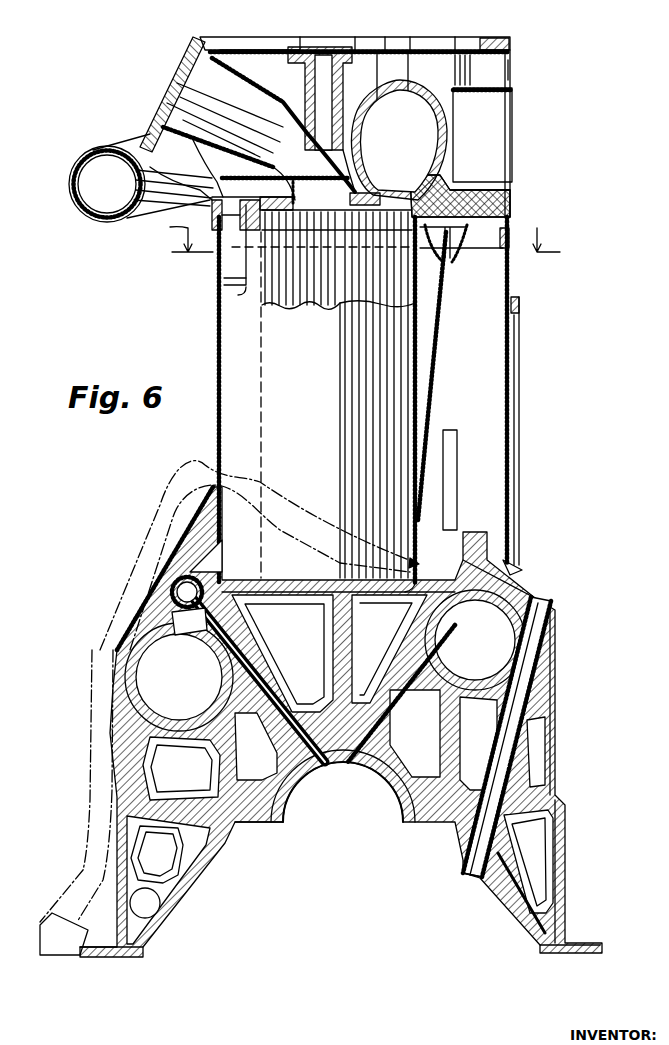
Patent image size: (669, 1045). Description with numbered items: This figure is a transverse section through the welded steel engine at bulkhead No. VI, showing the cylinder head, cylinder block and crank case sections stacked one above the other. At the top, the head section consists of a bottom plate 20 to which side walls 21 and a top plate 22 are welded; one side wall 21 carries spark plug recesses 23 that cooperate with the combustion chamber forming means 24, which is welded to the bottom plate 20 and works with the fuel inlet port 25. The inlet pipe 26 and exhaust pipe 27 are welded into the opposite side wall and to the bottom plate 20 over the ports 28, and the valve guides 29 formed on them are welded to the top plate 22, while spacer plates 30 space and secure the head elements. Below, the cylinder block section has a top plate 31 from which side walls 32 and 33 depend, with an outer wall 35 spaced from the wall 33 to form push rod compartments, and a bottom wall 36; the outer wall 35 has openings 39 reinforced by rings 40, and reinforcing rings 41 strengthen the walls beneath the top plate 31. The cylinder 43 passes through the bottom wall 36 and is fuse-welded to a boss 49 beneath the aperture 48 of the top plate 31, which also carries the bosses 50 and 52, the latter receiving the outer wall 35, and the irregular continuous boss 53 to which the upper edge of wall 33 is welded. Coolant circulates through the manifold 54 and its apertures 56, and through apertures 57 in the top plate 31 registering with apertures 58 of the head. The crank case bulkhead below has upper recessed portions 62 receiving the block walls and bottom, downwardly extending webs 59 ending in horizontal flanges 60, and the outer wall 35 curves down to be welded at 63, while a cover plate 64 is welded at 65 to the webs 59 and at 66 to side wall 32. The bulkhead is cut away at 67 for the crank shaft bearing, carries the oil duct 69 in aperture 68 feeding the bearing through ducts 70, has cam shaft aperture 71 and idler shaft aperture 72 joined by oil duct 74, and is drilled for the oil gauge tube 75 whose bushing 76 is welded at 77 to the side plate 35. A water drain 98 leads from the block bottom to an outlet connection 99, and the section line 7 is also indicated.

The bottom plate 20 is at (512, 210).
The side walls 21 is at (512, 70).
The top plate 22 is at (263, 50).
The spark plug recesses 23 is at (496, 125).
The combustion chamber forming means 24 is at (410, 110).
The fuel inlet port 25 is at (512, 195).
The inlet pipe 26 is at (140, 150).
The exhaust pipe 27 is at (207, 97).
The ports 28 is at (338, 235).
The valve guides 29 is at (345, 108).
The spacer plates 30 is at (483, 60).
The top plate 31 is at (420, 225).
The side wall 32 is at (218, 375).
The side wall 33 is at (437, 364).
The outer wall 35 is at (515, 290).
The bottom wall 36 is at (300, 580).
The openings 39 is at (512, 345).
The rings 40 is at (518, 415).
The reinforcing rings 41 is at (468, 263).
The cylinders 43 is at (298, 330).
The apertures 48 is at (402, 225).
The bosses 49 is at (448, 265).
The boss 50 is at (210, 217).
The boss 52 is at (470, 238).
The irregular continuous boss 53 is at (510, 258).
The manifold 54 is at (245, 286).
The apertures 56 is at (220, 280).
The apertures 57 is at (238, 262).
The apertures 58 is at (237, 203).
The webs 59 is at (117, 872).
The horizontal flanges 60 is at (93, 955).
The upper recessed portions 62 is at (288, 592).
The weld 63 is at (565, 800).
The cover plate 64 is at (145, 595).
The weld 65 is at (118, 797).
The weld 66 is at (215, 487).
The cutaway portions 67 is at (278, 805).
The aligned apertures 68 is at (160, 586).
The oil duct 69 is at (187, 593).
The ducts 70 is at (322, 763).
The aligned apertures 71 is at (517, 593).
The aligned apertures 72 is at (137, 680).
The oil duct 74 is at (352, 763).
The oil gauge tube 75 is at (513, 755).
The bushing 76 is at (548, 608).
The weld 77 is at (547, 630).
The water drain 98 is at (92, 723).
The outlet connection 99 is at (40, 938).
The section line 7 is at (360, 234).
The bulkhead No. VI is at (520, 913).